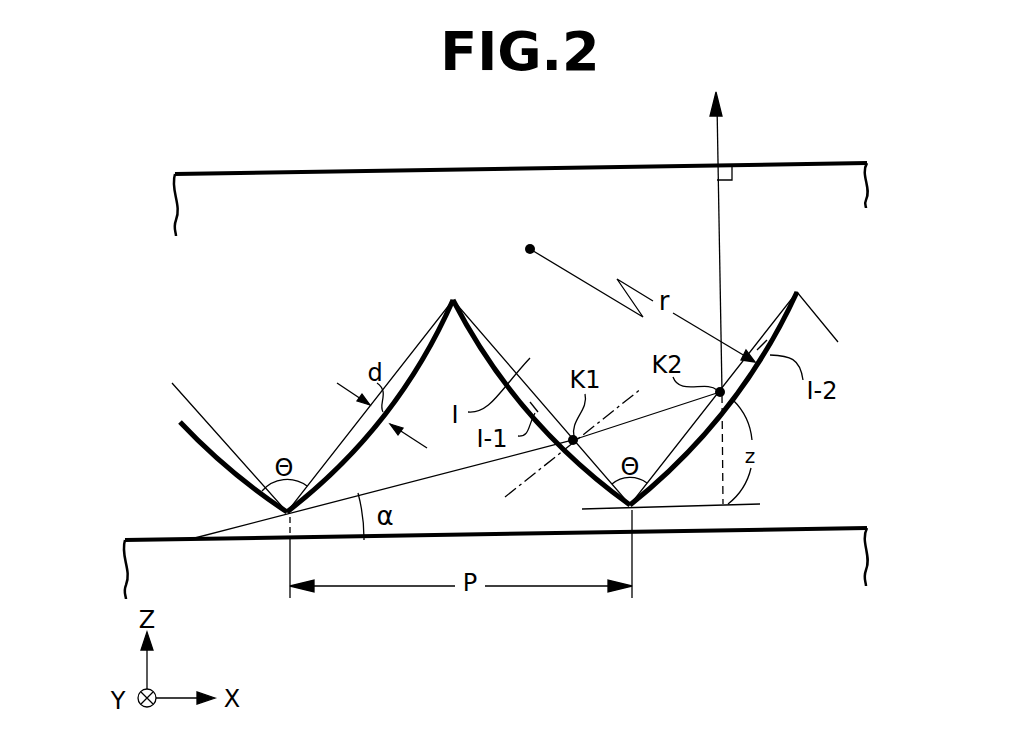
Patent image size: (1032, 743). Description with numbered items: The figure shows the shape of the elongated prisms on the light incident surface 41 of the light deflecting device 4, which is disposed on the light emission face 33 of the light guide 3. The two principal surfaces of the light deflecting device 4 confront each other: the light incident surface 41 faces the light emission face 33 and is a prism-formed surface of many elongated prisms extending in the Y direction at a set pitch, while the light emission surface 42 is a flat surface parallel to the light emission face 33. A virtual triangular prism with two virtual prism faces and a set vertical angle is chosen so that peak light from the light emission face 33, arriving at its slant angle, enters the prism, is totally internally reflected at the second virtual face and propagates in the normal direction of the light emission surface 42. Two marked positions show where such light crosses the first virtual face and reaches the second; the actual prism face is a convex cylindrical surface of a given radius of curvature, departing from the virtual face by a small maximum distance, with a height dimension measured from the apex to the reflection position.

The light guide 3 is at (505, 531).
The light emission face 33 is at (796, 528).
The light deflecting device 4 is at (520, 309).
The light incident surface 41 is at (478, 357).
The light emission surface 42 is at (327, 172).